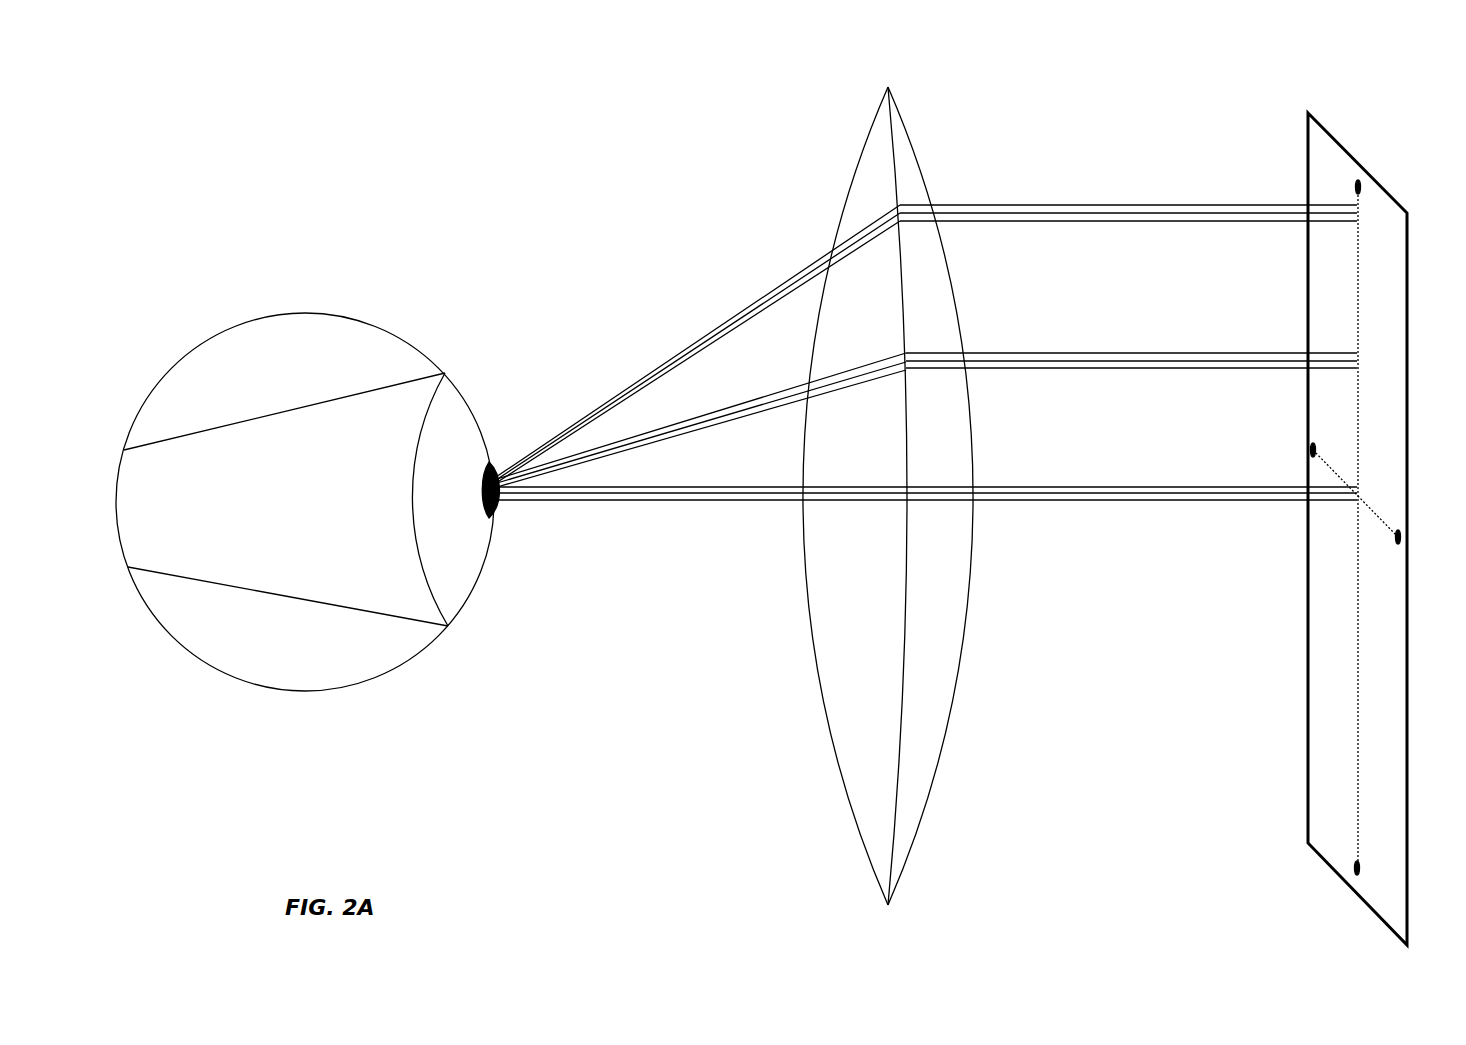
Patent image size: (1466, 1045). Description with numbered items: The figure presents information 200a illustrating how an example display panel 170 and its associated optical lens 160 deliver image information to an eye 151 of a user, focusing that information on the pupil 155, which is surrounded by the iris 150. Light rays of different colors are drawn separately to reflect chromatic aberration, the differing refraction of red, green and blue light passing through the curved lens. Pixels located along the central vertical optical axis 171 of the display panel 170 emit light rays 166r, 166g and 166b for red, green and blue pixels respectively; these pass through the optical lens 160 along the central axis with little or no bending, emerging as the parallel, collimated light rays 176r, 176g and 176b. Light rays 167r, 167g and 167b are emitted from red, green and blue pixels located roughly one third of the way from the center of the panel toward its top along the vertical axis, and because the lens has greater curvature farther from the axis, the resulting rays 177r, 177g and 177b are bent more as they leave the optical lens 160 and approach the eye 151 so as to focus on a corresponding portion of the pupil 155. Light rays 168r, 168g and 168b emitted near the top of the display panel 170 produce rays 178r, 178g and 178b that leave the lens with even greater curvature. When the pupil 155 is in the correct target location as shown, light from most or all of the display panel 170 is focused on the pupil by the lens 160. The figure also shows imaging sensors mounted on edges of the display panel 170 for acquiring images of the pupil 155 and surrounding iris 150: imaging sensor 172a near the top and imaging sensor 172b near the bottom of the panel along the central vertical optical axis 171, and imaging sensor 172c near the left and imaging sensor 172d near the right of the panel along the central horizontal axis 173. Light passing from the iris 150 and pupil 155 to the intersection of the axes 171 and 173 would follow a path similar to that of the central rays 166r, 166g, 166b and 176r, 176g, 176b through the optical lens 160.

The information 200a is at (217, 100).
The eye 151 is at (322, 314).
The iris 150 is at (460, 388).
The pupil 155 is at (497, 519).
The optical lens 160 is at (903, 112).
The display panel 170 is at (1397, 198).
The central vertical optical axis 171 is at (1357, 280).
The imaging sensor 172a is at (1355, 182).
The imaging sensor 172b is at (1355, 870).
The imaging sensor 172c is at (1310, 452).
The imaging sensor 172d is at (1395, 538).
The central horizontal axis 173 is at (1324, 452).
The light ray 176r is at (604, 487).
The light ray 176g is at (644, 493).
The light ray 176b is at (690, 500).
The light ray 177r is at (775, 395).
The light ray 177g is at (733, 413).
The light ray 177b is at (690, 433).
The light ray 178r is at (580, 417).
The light ray 178g is at (627, 390).
The light ray 178b is at (667, 370).
The light ray 166r is at (1110, 487).
The light ray 166g is at (1162, 493).
The light ray 166b is at (1213, 500).
The light ray 167r is at (1107, 352).
The light ray 167g is at (1157, 360).
The light ray 167b is at (1210, 367).
The light ray 168r is at (1087, 205).
The light ray 168g is at (1140, 213).
The light ray 168b is at (1195, 220).